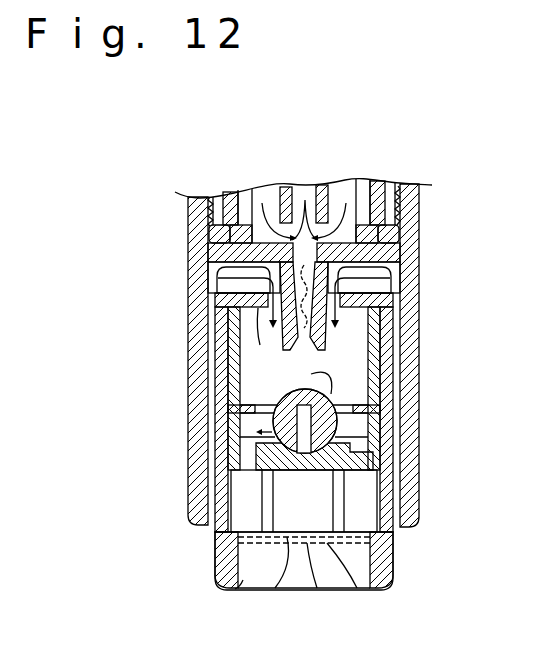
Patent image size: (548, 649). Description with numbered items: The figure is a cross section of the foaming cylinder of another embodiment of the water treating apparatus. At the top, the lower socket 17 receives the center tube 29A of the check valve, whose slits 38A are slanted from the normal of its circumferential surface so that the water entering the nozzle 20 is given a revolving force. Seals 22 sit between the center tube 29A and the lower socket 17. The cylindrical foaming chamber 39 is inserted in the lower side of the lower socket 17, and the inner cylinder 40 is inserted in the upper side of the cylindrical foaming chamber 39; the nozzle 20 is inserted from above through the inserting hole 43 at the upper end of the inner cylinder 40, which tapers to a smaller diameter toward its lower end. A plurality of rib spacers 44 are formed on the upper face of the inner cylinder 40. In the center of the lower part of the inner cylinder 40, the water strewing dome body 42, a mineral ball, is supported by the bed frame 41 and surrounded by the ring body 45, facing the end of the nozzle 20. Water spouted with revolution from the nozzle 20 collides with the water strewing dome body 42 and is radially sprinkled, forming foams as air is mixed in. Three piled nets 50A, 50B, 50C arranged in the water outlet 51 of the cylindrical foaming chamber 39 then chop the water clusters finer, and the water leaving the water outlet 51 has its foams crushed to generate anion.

The lower socket 17 is at (420, 391).
The center tube 29A is at (344, 192).
The slits 38A is at (305, 200).
The O-ring 22 is at (210, 230).
The rib spacer 44 is at (223, 281).
The cylindrical foaming chamber 39 is at (223, 358).
The inner cylinder 40 is at (380, 341).
The inserting hole 43 is at (291, 352).
The nozzle 20 is at (323, 340).
The water strewing dome body 42 is at (338, 432).
The ring body 45 is at (222, 456).
The bed frame 41 is at (260, 472).
The water outlet 51 is at (238, 585).
The net 50A is at (312, 586).
The net 50B is at (360, 585).
The net 50C is at (282, 585).